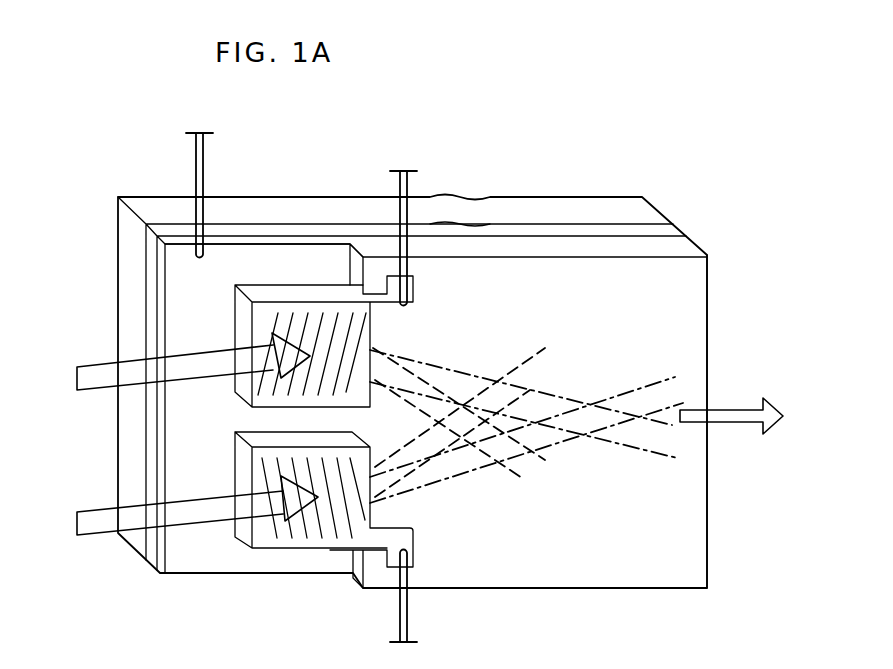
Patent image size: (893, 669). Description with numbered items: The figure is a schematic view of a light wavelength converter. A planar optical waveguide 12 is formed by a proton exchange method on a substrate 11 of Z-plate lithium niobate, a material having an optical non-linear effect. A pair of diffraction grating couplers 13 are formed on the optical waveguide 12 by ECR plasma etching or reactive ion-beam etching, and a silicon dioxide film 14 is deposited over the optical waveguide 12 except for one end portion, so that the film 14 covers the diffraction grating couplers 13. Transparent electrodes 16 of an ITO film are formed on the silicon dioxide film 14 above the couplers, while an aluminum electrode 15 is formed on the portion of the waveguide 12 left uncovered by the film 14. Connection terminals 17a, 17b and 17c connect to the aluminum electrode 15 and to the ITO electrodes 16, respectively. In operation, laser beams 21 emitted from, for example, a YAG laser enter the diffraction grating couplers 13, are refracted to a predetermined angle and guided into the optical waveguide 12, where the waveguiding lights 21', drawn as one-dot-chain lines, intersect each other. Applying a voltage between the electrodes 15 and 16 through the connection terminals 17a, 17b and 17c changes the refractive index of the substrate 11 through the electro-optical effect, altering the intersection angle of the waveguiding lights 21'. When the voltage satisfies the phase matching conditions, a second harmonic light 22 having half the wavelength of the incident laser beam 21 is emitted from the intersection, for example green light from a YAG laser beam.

The substrate 11 is at (632, 208).
The planar optical waveguide 12 is at (680, 227).
The diffraction grating coupler 13 is at (305, 297).
The SiO2 film 14 is at (695, 285).
The Al electrode 15 is at (233, 247).
The transparent electrode 16 is at (372, 333).
The connection terminal 17a is at (193, 150).
The connection terminal 17b is at (406, 187).
The connection terminal 17c is at (410, 622).
The laser beam 21 is at (181, 469).
The waveguiding light 21' is at (526, 428).
The second harmonic light 22 is at (740, 417).